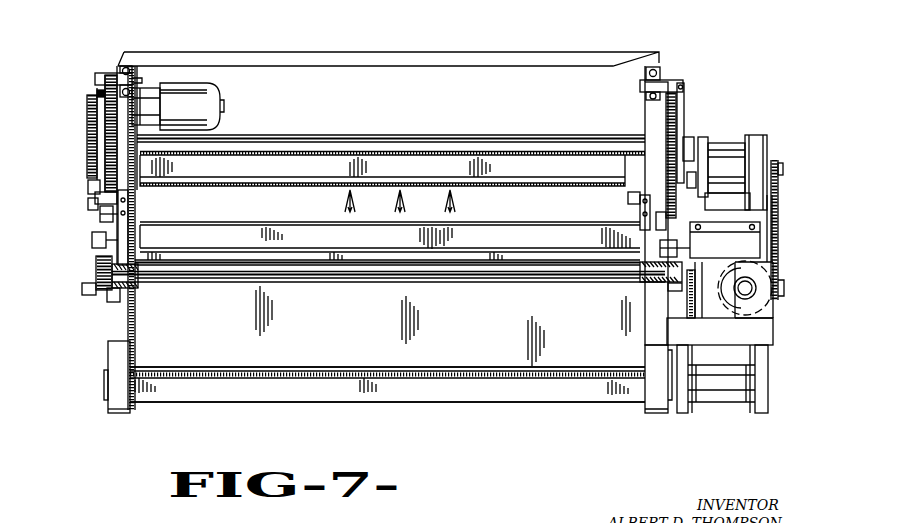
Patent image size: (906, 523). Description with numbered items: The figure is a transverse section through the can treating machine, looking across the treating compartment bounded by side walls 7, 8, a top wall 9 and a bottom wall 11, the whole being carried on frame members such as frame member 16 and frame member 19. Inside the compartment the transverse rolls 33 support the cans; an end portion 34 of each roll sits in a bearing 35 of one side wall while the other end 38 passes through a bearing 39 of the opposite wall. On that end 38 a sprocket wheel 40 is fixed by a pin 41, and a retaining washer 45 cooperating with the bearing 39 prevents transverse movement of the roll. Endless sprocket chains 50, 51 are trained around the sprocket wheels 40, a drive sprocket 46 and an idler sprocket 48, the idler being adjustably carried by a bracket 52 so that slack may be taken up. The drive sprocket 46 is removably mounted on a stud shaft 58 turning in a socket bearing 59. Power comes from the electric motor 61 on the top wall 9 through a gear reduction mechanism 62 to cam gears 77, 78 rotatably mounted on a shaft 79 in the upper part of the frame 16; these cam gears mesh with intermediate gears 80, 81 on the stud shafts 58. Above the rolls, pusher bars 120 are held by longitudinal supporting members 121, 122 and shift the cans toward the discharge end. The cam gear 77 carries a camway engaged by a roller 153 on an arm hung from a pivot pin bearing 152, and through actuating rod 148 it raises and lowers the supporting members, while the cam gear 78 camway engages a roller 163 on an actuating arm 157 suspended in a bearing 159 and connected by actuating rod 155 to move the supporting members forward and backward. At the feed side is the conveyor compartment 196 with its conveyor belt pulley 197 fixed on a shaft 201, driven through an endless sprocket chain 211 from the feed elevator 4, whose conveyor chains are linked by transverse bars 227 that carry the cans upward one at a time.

The feed elevator 4 is at (775, 159).
The side wall 7 is at (135, 326).
The side wall 8 is at (643, 309).
The top wall 9 is at (438, 152).
The bottom wall 11 is at (430, 378).
The frame member 16 is at (118, 352).
The frame member 19 is at (96, 108).
The transverse roll 33 is at (465, 273).
The end portion of roll 34 is at (120, 288).
The bearing 35 is at (138, 286).
The roll end 38 is at (642, 278).
The bearing 39 is at (656, 285).
The sprocket wheel 40 is at (96, 259).
The pin 41 is at (677, 262).
The retaining washer 45 is at (140, 260).
The drive sprocket 46 is at (95, 203).
The idler sprocket 48 is at (95, 241).
The endless sprocket chain 50 is at (702, 316).
The endless sprocket chain 51 is at (86, 290).
The bracket 52 is at (688, 293).
The stud shaft 58 is at (96, 213).
The socket bearing 59 is at (121, 204).
The electric motor 61 is at (213, 100).
The gear reduction mechanism 62 is at (149, 98).
The cam gear 77 is at (106, 96).
The cam gear 78 is at (676, 140).
The shaft 79 is at (352, 142).
The intermediate gear 80 is at (90, 185).
The intermediate gear 81 is at (640, 198).
The pusher bar 120 is at (240, 233).
The pusher bar supporting member 121 is at (622, 193).
The pusher bar supporting member 122 is at (141, 217).
The actuating rod 148 is at (93, 195).
The pivot pin bearing 152 is at (112, 76).
The roller 153 is at (107, 138).
The actuating rod 155 is at (694, 205).
The actuating arm 157 is at (683, 150).
The bearing 159 is at (665, 83).
The roller 163 is at (676, 178).
The conveyor compartment 196 is at (284, 256).
The conveyor belt pulley 197 is at (767, 311).
The shaft 201 is at (748, 285).
The endless sprocket chain 211 is at (773, 233).
The transverse bar 227 is at (723, 158).